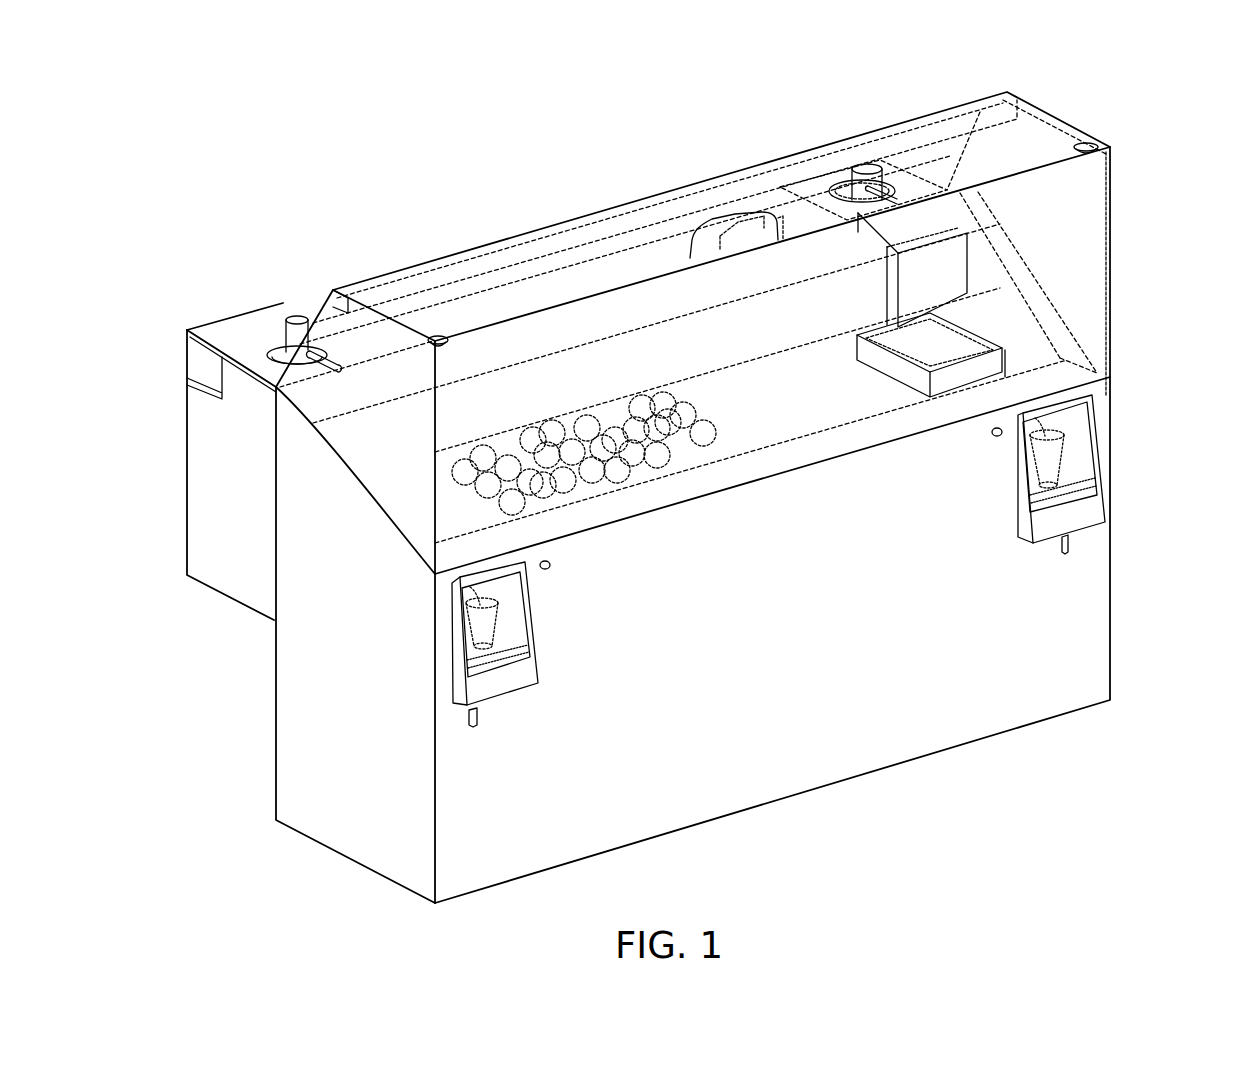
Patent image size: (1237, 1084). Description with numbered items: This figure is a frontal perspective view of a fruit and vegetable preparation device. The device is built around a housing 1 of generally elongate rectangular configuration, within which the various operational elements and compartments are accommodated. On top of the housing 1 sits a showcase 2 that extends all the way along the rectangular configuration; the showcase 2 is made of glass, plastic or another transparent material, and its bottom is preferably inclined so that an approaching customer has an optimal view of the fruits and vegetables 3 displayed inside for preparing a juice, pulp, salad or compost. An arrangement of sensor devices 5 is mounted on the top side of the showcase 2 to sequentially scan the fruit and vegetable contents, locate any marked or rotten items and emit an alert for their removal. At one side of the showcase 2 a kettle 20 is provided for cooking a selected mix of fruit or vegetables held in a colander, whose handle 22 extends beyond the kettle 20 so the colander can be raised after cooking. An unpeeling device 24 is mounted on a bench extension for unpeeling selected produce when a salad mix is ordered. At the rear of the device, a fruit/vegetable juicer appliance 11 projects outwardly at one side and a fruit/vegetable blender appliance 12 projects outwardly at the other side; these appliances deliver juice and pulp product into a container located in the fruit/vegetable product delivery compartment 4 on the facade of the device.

The housing 1 is at (1085, 607).
The showcase 2 is at (1083, 197).
The fruits and/or vegetables 3 is at (614, 469).
The fruit/vegetable product delivery compartment 4 is at (513, 683).
The sensor devices 5 is at (438, 336).
The fruit/vegetable juicer appliance 11 is at (245, 327).
The fruit/vegetable blender appliance 12 is at (912, 172).
The kettle 20 is at (983, 367).
The handle 22 is at (892, 273).
The unpeeling device 24 is at (732, 216).